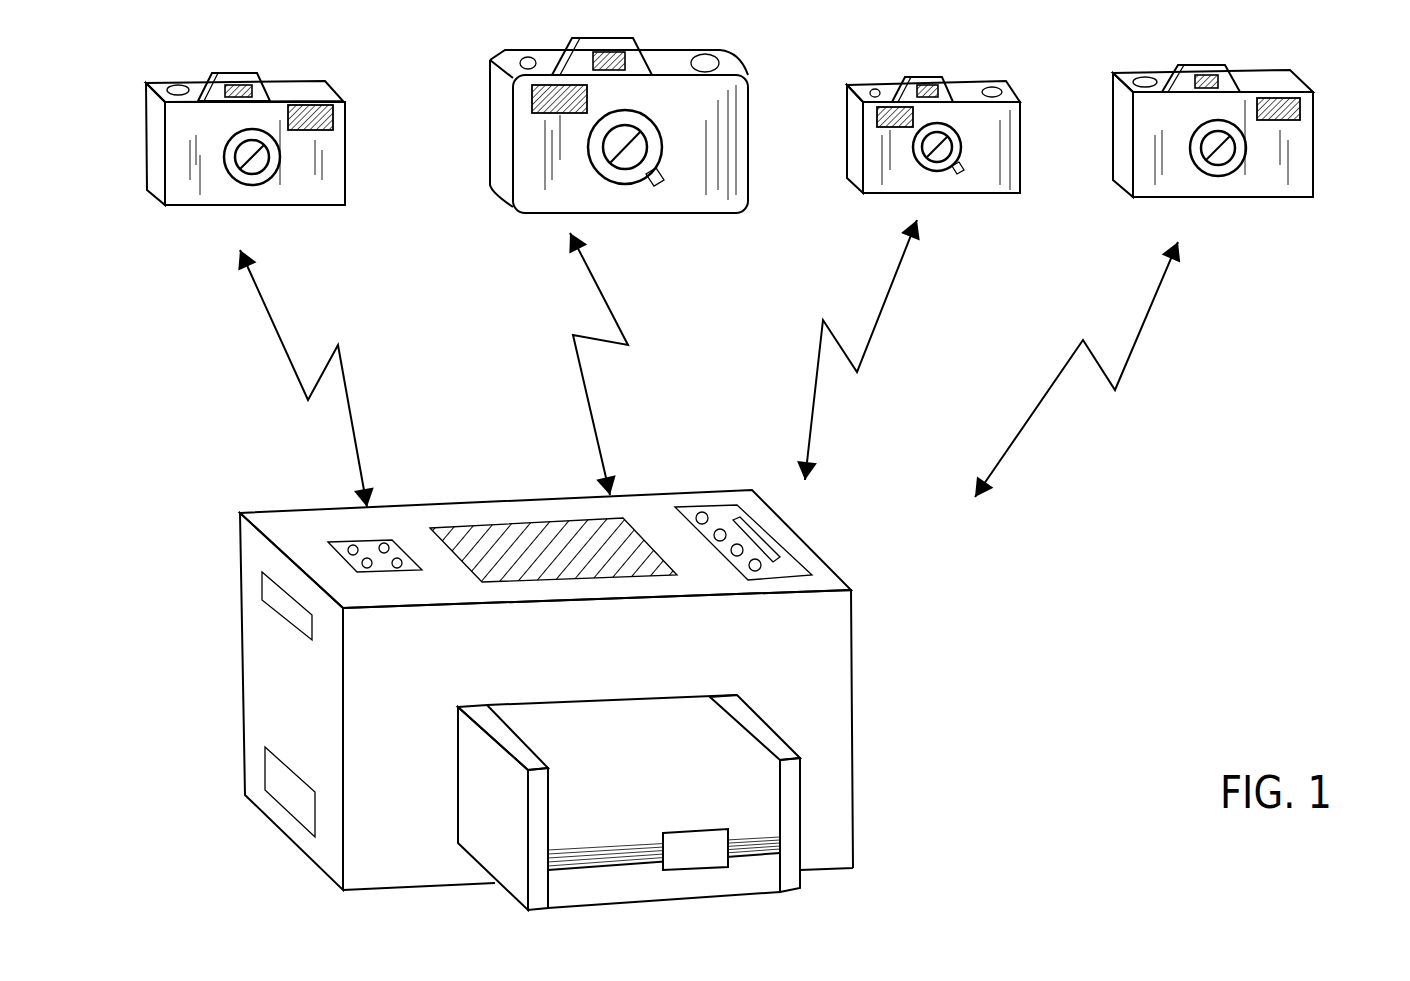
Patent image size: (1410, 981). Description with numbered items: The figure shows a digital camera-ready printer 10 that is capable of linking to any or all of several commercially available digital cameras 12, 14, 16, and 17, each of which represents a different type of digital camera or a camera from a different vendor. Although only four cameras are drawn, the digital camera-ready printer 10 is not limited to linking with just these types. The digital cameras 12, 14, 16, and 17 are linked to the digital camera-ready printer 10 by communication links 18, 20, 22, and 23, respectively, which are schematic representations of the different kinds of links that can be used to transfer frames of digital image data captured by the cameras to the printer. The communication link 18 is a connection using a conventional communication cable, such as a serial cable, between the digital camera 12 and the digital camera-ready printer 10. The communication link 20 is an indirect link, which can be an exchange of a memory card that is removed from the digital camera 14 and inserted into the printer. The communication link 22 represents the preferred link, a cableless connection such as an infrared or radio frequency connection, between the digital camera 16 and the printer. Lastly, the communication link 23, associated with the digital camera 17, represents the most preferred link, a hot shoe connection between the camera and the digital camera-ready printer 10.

The digital camera-ready printer 10 is at (932, 615).
The digital camera 12 is at (362, 85).
The digital camera 14 is at (758, 52).
The digital camera 16 is at (1030, 70).
The digital camera 17 is at (1330, 75).
The communication link 18 is at (270, 397).
The communication link 20 is at (557, 395).
The communication link 22 is at (790, 392).
The communication link 23 is at (1020, 392).